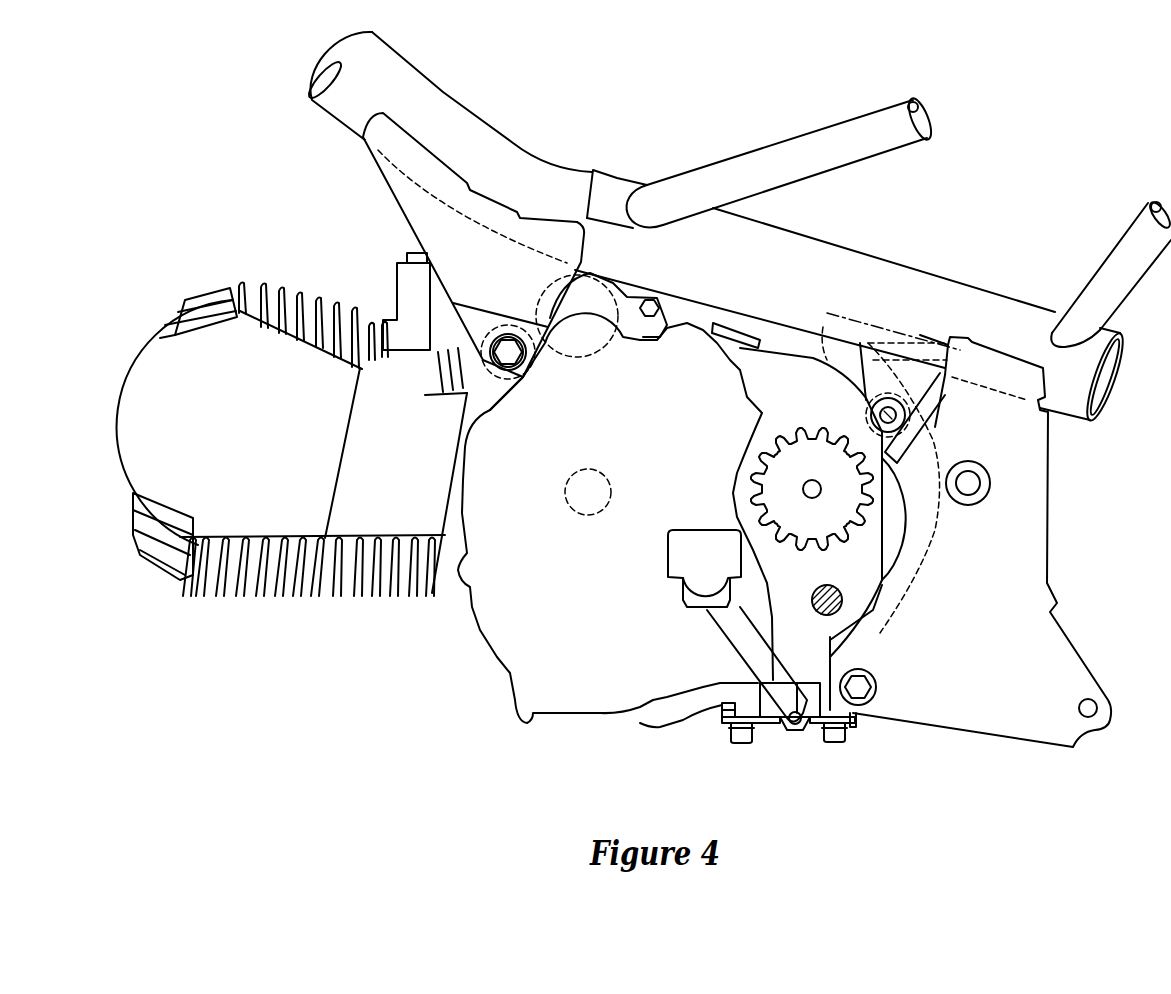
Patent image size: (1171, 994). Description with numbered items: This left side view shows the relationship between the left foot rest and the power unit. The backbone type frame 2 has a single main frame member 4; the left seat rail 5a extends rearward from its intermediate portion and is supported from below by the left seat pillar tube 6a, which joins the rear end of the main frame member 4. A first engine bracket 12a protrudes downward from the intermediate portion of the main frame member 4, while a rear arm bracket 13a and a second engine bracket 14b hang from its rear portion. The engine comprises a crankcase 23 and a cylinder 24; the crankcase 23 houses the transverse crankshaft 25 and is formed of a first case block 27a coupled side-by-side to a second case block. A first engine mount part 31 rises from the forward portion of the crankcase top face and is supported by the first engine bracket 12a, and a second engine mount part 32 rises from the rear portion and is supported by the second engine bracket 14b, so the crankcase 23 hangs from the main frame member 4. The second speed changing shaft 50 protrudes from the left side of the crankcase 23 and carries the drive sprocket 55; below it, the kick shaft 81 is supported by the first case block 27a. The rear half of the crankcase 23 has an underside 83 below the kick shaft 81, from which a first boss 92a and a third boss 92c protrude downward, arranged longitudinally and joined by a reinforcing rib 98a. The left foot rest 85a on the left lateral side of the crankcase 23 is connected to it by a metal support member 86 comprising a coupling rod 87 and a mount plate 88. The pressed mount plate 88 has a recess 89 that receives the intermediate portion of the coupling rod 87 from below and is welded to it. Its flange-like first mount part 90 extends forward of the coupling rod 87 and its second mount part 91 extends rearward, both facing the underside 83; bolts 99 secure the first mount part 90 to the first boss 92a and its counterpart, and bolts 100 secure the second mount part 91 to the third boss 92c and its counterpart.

The frame 2 is at (447, 90).
The main frame member 4 is at (547, 172).
The seat rail 5a is at (813, 143).
The seat pillar tube 6a is at (1123, 248).
The first engine bracket 12a is at (423, 218).
The second engine bracket 14b is at (915, 375).
The rear arm bracket 13a is at (1033, 569).
The first engine mount part 31 is at (486, 366).
The second engine mount part 32 is at (863, 390).
The crankcase 23 is at (463, 632).
The cylinder 24 is at (347, 520).
The crankshaft 25 is at (597, 470).
The first case block 27a is at (863, 553).
The second speed changing shaft 50 is at (810, 489).
The drive sprocket 55 is at (800, 457).
The kick shaft 81 is at (840, 603).
The underside 83 is at (743, 690).
The foot rest 85a is at (700, 540).
The support member 86 is at (764, 748).
The coupling rod 87 is at (733, 632).
The mount plate 88 is at (773, 723).
The recess 89 is at (802, 722).
The first mount part 90 is at (740, 720).
The second mount part 91 is at (853, 720).
The first boss 92a is at (733, 708).
The third boss 92c is at (847, 697).
The reinforcing rib 98a is at (807, 690).
The bolts 99 is at (742, 743).
The bolts 100 is at (840, 742).